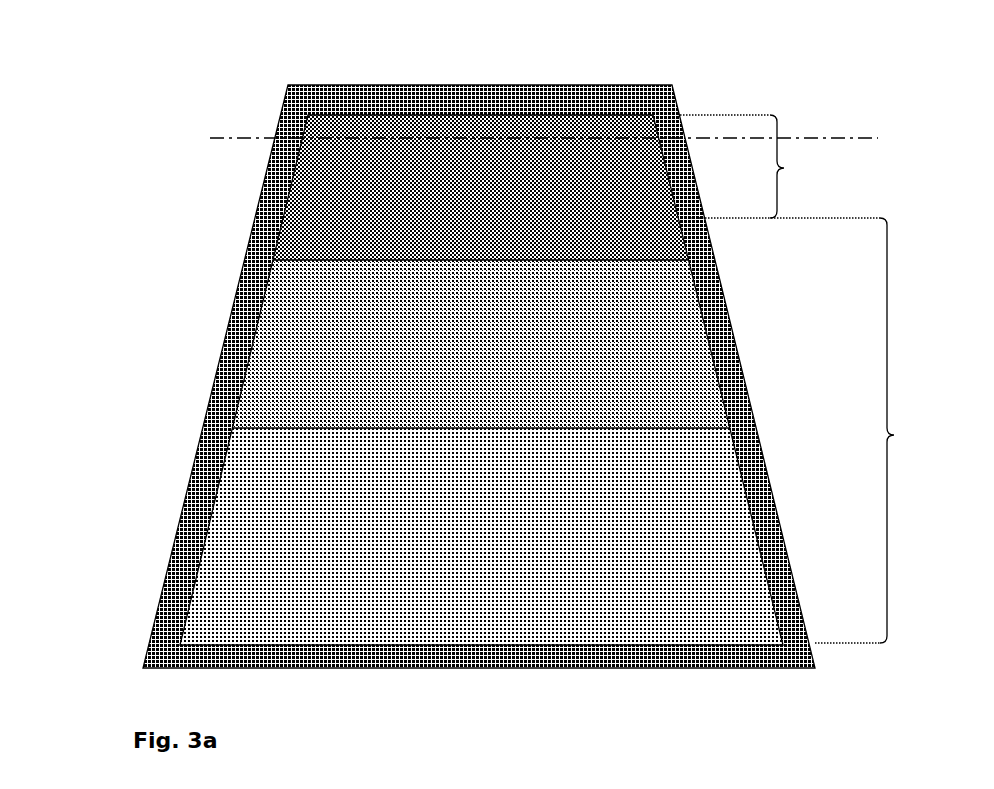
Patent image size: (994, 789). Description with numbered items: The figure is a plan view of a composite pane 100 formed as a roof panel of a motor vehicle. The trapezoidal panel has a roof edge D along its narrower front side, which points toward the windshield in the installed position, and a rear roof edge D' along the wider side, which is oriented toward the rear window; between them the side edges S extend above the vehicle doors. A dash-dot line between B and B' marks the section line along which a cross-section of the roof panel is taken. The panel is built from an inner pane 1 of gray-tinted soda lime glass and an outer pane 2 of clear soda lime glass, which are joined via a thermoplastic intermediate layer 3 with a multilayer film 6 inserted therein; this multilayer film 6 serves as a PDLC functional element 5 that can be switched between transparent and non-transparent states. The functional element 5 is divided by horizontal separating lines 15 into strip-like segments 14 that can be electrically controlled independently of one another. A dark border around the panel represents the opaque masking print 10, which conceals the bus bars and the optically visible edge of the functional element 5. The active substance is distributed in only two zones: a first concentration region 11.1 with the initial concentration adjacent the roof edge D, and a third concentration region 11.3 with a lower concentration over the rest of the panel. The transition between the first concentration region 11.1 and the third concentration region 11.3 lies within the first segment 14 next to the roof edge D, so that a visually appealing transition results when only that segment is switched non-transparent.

The composite pane 100 is at (175, 78).
The opaque masking print 10 is at (802, 663).
The segments 14 is at (360, 190).
The separating lines 15 is at (300, 258).
The functional element 5 is at (290, 355).
The inner pane 1 is at (602, 595).
The outer pane 2 is at (481, 536).
The thermoplastic intermediate layer 3 is at (481, 536).
The multilayer film 6 is at (481, 536).
The first concentration region 11.1 is at (780, 166).
The third concentration region 11.3 is at (884, 430).
The section line endpoint B is at (531, 137).
The section line endpoint B' is at (560, 137).
The roof edge D is at (480, 48).
The rear roof edge D' is at (479, 706).
The side edges S is at (176, 539).